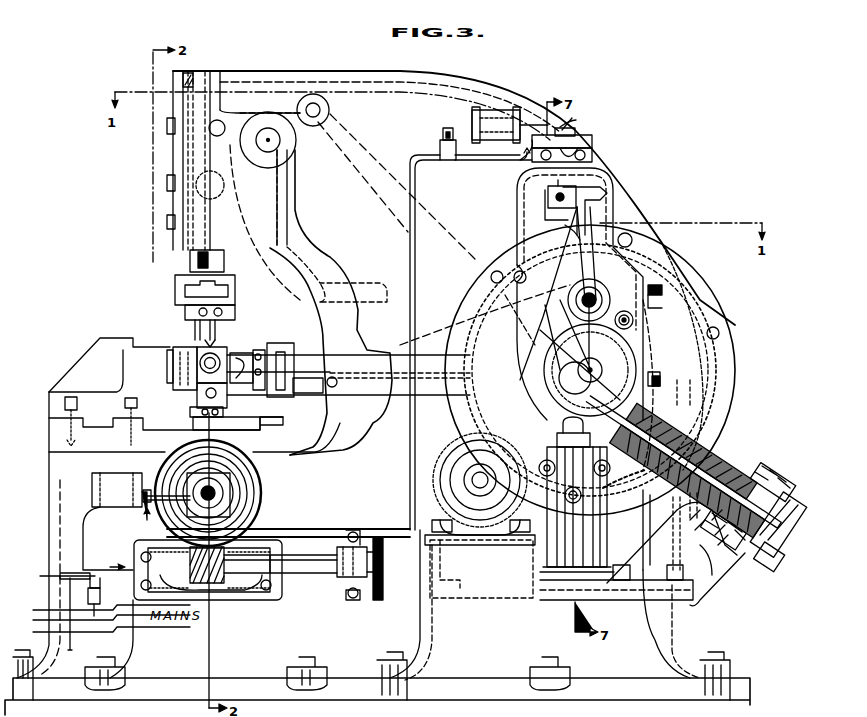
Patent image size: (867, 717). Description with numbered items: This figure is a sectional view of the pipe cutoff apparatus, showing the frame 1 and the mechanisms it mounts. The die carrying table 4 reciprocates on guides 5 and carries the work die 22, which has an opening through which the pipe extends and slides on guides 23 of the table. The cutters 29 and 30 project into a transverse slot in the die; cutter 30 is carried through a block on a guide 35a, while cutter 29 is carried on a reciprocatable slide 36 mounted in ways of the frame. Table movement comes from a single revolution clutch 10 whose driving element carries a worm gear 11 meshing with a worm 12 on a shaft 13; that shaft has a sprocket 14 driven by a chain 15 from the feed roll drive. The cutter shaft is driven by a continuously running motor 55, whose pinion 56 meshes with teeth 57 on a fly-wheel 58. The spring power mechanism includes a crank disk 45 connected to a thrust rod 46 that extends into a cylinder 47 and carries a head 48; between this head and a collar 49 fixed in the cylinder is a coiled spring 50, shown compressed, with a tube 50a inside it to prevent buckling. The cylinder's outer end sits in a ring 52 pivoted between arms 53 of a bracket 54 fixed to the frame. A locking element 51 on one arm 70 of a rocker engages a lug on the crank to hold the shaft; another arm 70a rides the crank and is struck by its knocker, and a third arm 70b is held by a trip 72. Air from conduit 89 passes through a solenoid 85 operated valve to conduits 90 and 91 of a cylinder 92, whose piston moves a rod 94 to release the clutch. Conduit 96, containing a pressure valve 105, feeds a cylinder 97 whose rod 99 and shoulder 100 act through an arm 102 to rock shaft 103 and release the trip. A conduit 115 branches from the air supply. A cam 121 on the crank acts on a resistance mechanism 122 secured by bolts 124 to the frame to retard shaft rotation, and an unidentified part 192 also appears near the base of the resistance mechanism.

The frame 1 is at (377, 622).
The die carrying table 4 is at (255, 435).
The guides 5 is at (270, 423).
The single revolution clutch 10 is at (218, 505).
The worm gear 11 is at (255, 495).
The worm 12 is at (218, 600).
The shaft 13 is at (312, 578).
The sprocket 14 is at (382, 560).
The chain 15 is at (378, 600).
The work die 22 is at (227, 348).
The guides 23 is at (167, 372).
The cutter 29 is at (253, 345).
The cutter 30 is at (240, 318).
The guide 35a is at (215, 292).
The reciprocatable slide 36 is at (224, 262).
The crank disk 45 is at (612, 366).
The thrust rod 46 is at (782, 465).
The cylinder 47 is at (775, 566).
The collar or head 48 is at (778, 575).
The collar 49 is at (624, 474).
The coiled spring 50 is at (748, 458).
The tube 50a is at (715, 437).
The locking element 51 is at (545, 283).
The ring 52 is at (735, 565).
The arms 53 is at (715, 590).
The bracket 54 is at (645, 600).
The motor 55 is at (478, 530).
The pinion 56 is at (458, 450).
The teeth 57 is at (470, 313).
The fly-wheel 58 is at (700, 350).
The rocker arm 70 is at (575, 270).
The rocker arm 70a is at (628, 288).
The third rocker arm 70b is at (577, 232).
The trip 72 is at (598, 192).
The solenoid 85 is at (88, 594).
The conduit 89 is at (72, 645).
The conduit 90 is at (86, 525).
The conduit 91 is at (120, 580).
The cylinder 92 is at (112, 507).
The rod 94 is at (148, 490).
The conduit 96 is at (415, 217).
The cylinder 97 is at (495, 140).
The rod 99 is at (543, 140).
The shoulder 100 is at (585, 125).
The arm 102 is at (594, 144).
The rock shaft 103 is at (548, 198).
The pressure valve 105 is at (448, 160).
The conduit 115 is at (40, 576).
The cam 121 is at (557, 440).
The resistance mechanism 122 is at (585, 509).
The bolts 124 is at (603, 492).
The bolt 192 is at (562, 458).